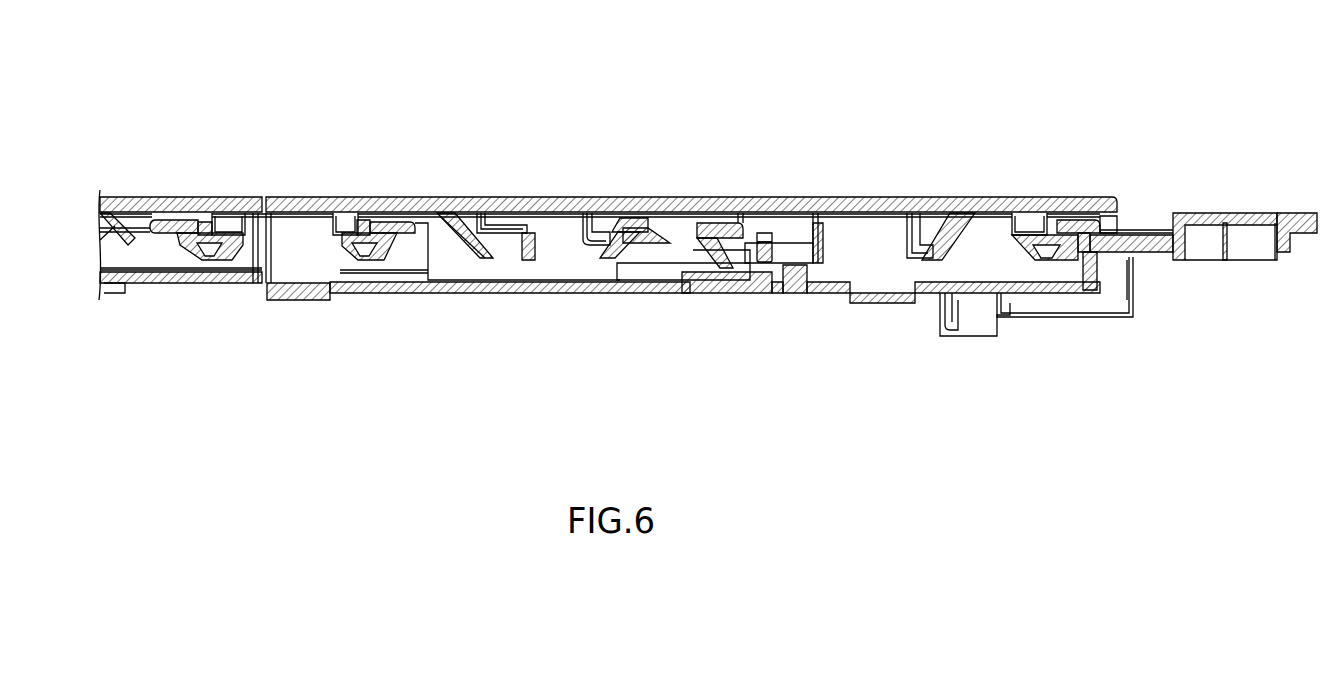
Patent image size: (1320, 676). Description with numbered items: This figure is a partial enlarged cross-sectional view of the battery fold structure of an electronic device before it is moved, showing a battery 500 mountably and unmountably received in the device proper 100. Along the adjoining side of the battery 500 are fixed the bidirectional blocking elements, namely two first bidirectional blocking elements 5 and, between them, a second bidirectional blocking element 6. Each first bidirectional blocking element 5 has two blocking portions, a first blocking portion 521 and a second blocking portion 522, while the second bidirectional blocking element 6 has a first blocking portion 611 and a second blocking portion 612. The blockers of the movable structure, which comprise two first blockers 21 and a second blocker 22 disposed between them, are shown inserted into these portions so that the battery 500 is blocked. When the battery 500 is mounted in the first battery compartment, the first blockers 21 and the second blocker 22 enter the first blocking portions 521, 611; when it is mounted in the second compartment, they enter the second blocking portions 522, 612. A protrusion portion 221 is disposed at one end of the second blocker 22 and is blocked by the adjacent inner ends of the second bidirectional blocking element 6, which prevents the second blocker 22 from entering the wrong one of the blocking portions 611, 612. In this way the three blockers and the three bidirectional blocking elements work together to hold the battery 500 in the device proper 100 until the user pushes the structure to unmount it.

The battery 500 is at (127, 198).
The device proper 100 is at (1232, 210).
The first blocker 21 is at (164, 211).
The second blocking portion 522 is at (190, 211).
The first blocking portion 521 is at (227, 211).
The first bidirectional blocking element 5 is at (184, 257).
The second bidirectional blocking element 6 is at (693, 249).
The first blocking portion 611 is at (606, 211).
The second blocking portion 612 is at (713, 212).
The second blocker 22 is at (648, 241).
The protrusion portion 221 is at (659, 244).